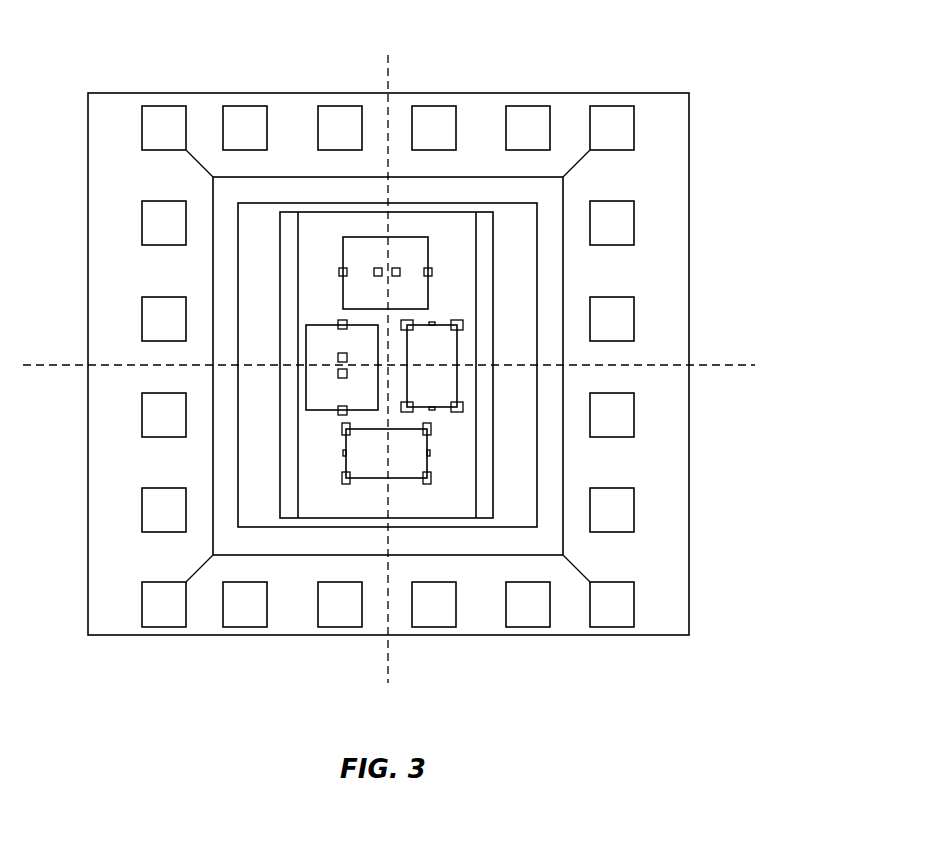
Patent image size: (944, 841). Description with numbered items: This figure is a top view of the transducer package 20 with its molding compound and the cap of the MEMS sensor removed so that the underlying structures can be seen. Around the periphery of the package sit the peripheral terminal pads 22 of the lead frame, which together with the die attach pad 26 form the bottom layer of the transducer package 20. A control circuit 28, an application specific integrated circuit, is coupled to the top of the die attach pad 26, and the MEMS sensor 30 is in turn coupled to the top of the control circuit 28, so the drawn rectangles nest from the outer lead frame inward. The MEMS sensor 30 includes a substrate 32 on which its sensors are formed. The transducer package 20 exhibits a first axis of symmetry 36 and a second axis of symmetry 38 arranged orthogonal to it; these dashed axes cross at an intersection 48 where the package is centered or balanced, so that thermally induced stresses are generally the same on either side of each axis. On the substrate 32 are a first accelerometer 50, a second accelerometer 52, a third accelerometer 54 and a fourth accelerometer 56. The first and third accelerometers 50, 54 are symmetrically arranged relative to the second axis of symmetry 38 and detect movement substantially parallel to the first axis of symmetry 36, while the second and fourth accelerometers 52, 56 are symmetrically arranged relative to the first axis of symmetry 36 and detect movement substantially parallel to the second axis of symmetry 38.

The transducer package 20 is at (618, 718).
The peripheral terminal pads 22 is at (160, 115).
The die attach pad 26 is at (552, 270).
The control circuit 28 is at (527, 477).
The MEMS sensor 30 is at (311, 228).
The substrate 32 is at (465, 437).
The first axis of symmetry 36 is at (713, 367).
The second axis of symmetry 38 is at (387, 79).
The intersection 48 is at (390, 365).
The first accelerometer 50 is at (395, 240).
The second accelerometer 52 is at (452, 353).
The third accelerometer 54 is at (375, 475).
The fourth accelerometer 56 is at (313, 341).